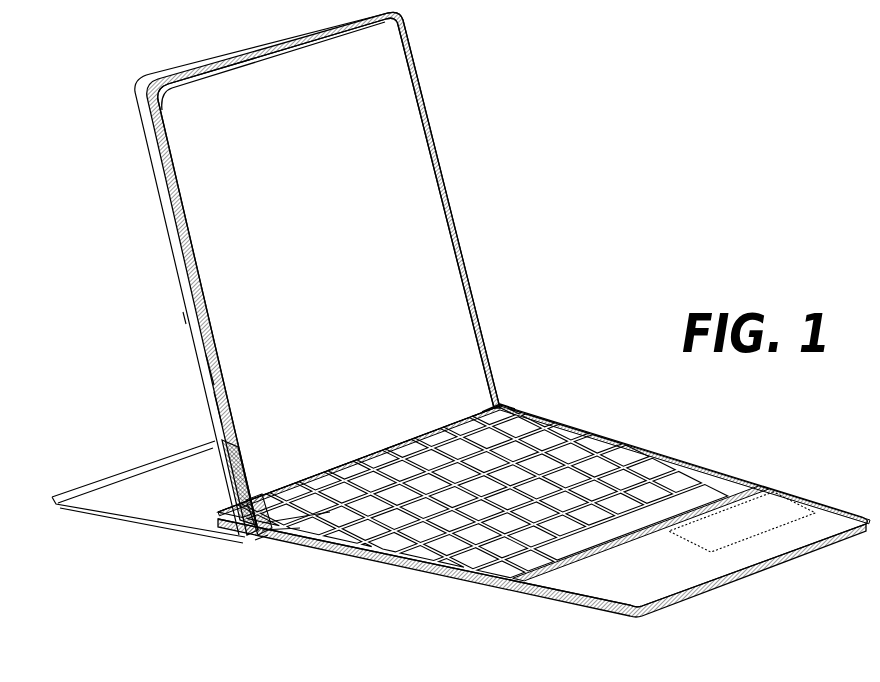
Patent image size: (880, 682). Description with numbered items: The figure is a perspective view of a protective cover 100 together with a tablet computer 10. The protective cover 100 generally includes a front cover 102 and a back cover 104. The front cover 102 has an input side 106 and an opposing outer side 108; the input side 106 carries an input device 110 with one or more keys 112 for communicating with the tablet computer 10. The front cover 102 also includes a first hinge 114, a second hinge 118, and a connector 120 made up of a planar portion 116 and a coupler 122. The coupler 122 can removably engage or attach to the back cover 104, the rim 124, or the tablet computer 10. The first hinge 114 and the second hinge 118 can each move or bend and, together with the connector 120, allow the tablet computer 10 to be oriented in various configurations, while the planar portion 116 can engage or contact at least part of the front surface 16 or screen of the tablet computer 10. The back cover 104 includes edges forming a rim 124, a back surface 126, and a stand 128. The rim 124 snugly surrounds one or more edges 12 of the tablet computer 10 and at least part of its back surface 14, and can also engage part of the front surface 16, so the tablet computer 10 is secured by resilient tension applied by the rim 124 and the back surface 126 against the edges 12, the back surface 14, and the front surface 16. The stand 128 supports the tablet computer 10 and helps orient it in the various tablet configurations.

The tablet computer 10 is at (432, 214).
The edges 12 is at (157, 172).
The back surface 14 is at (158, 210).
The front surface 16 is at (387, 115).
The protective cover 100 is at (632, 310).
The front cover 102 is at (695, 622).
The back cover 104 is at (172, 316).
The input side 106 is at (788, 503).
The outer side 108 is at (560, 600).
The input device 110 is at (687, 473).
The keys 112 is at (635, 450).
The first hinge 114 is at (497, 405).
The planar portion 116 is at (268, 522).
The second hinge 118 is at (302, 527).
The connector 120 is at (250, 573).
The coupler 122 is at (287, 540).
The rim 124 is at (210, 363).
The back surface 126 is at (208, 398).
The stand 128 is at (110, 495).